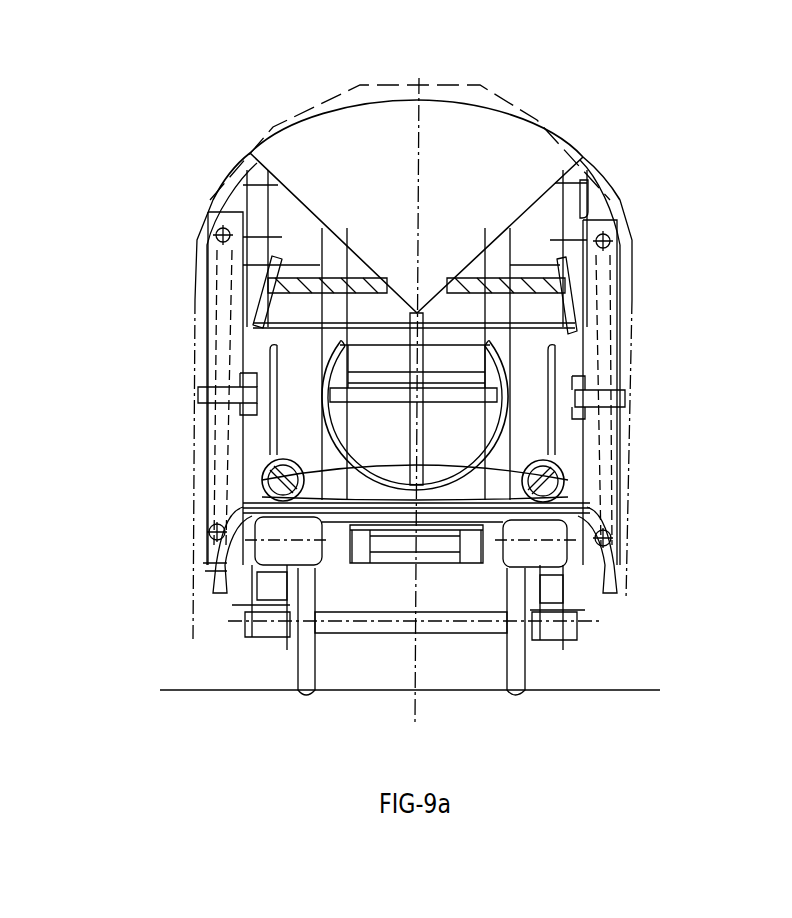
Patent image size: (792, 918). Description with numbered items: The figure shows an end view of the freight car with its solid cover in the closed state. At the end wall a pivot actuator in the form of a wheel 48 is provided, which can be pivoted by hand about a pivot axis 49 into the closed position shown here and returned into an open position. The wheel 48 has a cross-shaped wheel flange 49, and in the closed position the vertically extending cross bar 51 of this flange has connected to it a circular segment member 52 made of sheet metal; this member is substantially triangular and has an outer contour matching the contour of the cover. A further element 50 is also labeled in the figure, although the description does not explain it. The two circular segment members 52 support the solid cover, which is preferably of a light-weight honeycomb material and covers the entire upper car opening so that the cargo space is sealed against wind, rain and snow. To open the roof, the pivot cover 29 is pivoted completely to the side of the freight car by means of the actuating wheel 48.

The pivot cover 29 is at (517, 113).
The circular segment member 52 is at (325, 127).
The cross bar 51 is at (412, 362).
The crossbar 50 is at (375, 397).
The wheel 48 is at (418, 392).
The pivot axis 49 is at (418, 394).